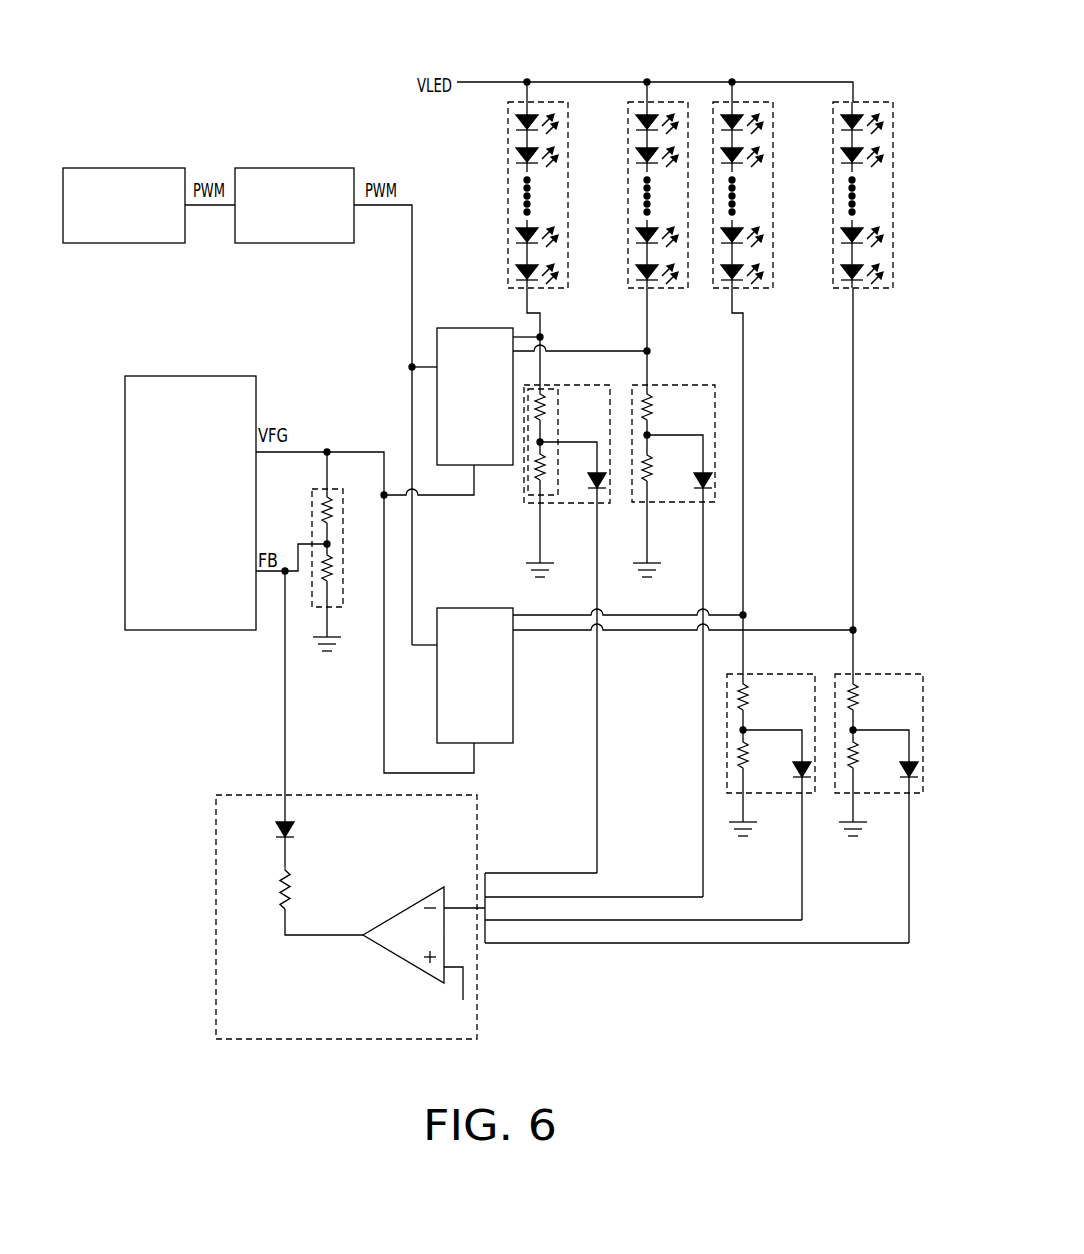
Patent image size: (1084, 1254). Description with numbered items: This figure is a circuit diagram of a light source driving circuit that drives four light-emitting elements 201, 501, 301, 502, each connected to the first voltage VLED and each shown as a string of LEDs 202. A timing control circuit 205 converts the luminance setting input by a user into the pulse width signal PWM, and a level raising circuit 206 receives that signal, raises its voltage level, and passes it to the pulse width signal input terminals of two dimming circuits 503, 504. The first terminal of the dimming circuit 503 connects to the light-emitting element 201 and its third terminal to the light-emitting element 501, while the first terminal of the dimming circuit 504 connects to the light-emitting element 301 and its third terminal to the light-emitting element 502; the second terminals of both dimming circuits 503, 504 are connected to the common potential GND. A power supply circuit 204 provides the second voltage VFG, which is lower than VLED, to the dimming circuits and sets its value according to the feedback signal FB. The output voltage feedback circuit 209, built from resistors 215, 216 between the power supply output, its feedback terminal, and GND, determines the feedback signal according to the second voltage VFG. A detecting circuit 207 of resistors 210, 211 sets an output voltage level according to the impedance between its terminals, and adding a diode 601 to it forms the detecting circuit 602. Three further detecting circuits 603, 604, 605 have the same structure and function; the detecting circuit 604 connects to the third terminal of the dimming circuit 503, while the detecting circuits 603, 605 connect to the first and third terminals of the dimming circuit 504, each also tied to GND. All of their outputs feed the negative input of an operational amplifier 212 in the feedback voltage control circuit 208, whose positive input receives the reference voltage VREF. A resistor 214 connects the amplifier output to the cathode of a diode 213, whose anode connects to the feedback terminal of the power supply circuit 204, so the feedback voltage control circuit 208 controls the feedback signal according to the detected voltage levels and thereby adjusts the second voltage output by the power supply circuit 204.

The light-emitting element 201 is at (559, 156).
The LED 202 is at (563, 85).
The light-emitting element 501 is at (655, 97).
The light-emitting element 301 is at (742, 97).
The light-emitting element 502 is at (863, 97).
The timing control circuit 205 is at (117, 243).
The level raising circuit 206 is at (288, 243).
The power supply circuit 204 is at (190, 630).
The output voltage feedback circuit 209 is at (345, 565).
The resistor 215 is at (340, 512).
The resistor 216 is at (340, 572).
The dimming circuit 503 is at (497, 465).
The dimming circuit 504 is at (497, 743).
The detecting circuit 207 is at (565, 442).
The resistor 210 is at (548, 408).
The resistor 211 is at (548, 467).
The detecting circuit 602 is at (576, 494).
The diode 601 is at (603, 495).
The detecting circuit 604 is at (670, 507).
The detecting circuit 603 is at (768, 793).
The detecting circuit 605 is at (877, 793).
The feedback voltage control circuit 208 is at (313, 917).
The diode 213 is at (275, 828).
The resistor 214 is at (278, 880).
The operational amplifier 212 is at (403, 963).